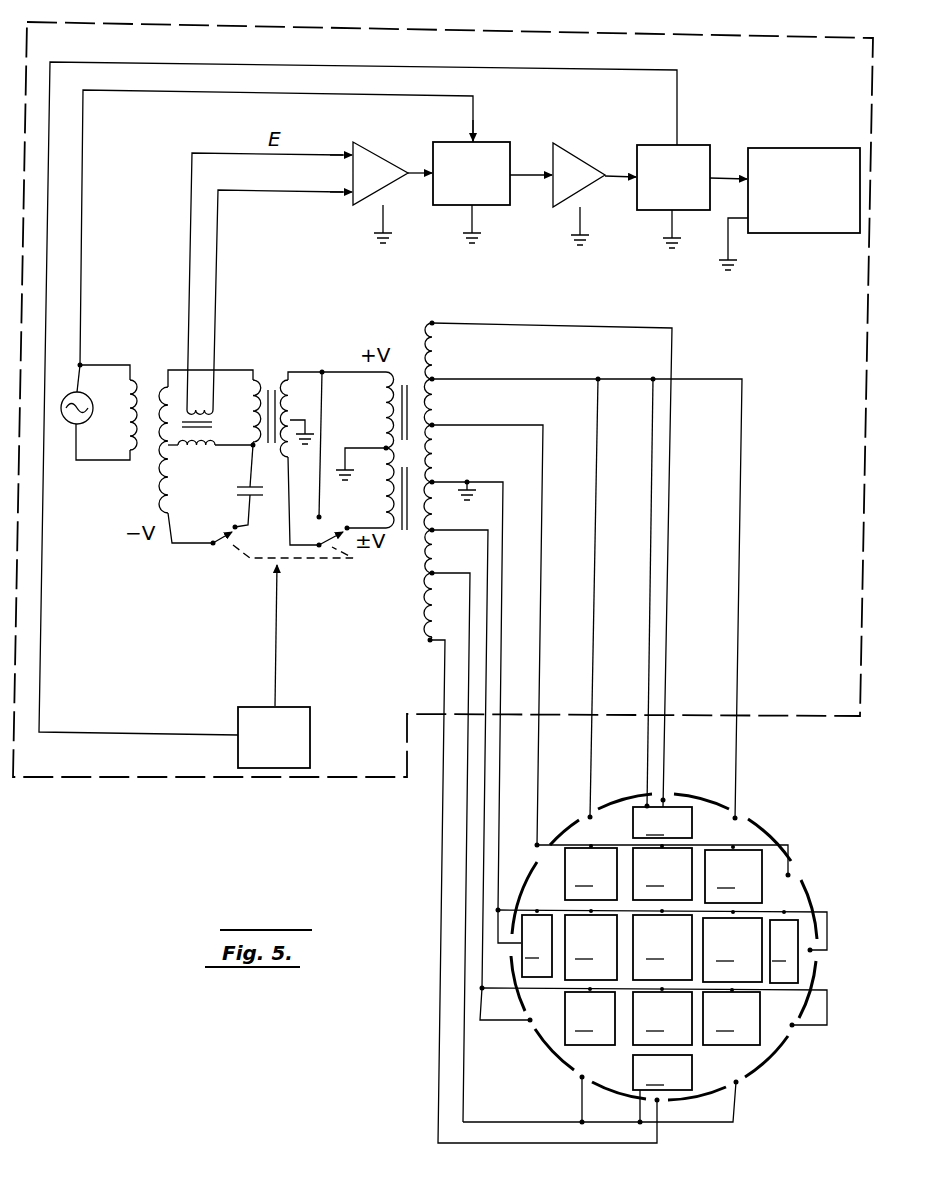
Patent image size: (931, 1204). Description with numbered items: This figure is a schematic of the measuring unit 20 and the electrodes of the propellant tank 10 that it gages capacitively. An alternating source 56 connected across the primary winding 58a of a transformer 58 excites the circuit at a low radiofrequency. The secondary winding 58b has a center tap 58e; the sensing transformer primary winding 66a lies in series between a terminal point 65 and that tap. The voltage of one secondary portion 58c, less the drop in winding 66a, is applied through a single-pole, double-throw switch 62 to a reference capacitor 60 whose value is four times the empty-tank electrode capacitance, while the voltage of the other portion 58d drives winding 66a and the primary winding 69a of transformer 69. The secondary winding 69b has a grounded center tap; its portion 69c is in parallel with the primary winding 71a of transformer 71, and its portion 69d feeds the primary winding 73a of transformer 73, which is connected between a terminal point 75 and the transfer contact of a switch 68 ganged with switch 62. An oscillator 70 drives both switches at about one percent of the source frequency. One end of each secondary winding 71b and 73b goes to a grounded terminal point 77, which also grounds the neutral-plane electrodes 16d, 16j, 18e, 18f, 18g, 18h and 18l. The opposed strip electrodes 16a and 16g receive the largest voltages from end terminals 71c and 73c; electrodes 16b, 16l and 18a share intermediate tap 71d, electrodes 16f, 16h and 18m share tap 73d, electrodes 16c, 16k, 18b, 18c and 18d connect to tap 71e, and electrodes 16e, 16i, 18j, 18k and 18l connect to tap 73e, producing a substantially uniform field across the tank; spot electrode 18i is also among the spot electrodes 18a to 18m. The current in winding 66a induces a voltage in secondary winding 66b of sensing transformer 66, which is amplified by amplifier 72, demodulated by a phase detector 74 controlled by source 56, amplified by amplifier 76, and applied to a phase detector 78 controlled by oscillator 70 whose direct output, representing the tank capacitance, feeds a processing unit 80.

The tank 10 is at (780, 830).
The strip electrode 16a is at (666, 802).
The strip electrode 16b is at (762, 797).
The strip electrode 16c is at (800, 882).
The strip electrode 16d is at (812, 960).
The strip electrode 16e is at (795, 1030).
The strip electrode 16f is at (742, 1084).
The strip electrode 16g is at (660, 1104).
The strip electrode 16h is at (578, 1077).
The strip electrode 16i is at (534, 1038).
The strip electrode 16j is at (512, 962).
The strip electrode 16k is at (536, 877).
The strip electrode 16l is at (590, 816).
The spot electrode 18a is at (662, 822).
The spot electrode 18b is at (591, 872).
The spot electrode 18c is at (662, 872).
The spot electrode 18d is at (733, 874).
The spot electrode 18e is at (538, 943).
The spot electrode 18f is at (591, 944).
The spot electrode 18g is at (662, 944).
The spot electrode 18h is at (732, 946).
The spot electrode 18i is at (784, 946).
The spot electrode 18j is at (590, 1016).
The spot electrode 18k is at (662, 1016).
The spot electrode 18l is at (731, 1016).
The spot electrode 18m is at (662, 1072).
The measuring unit 20 is at (712, 30).
The alternating source 56 is at (88, 398).
The transformer 58 is at (169, 433).
The transformer primary winding 58a is at (126, 434).
The transformer secondary winding 58b is at (163, 494).
The secondary winding portion 58c is at (190, 498).
The secondary winding portion 58d is at (166, 455).
The center tap 58e is at (191, 467).
The reference capacitor 60 is at (255, 498).
The single-pole, double-throw switch 62 is at (222, 543).
The terminal point 65 is at (250, 448).
The sensing transformer 66 is at (215, 423).
The sensing transformer primary winding 66a is at (204, 441).
The secondary winding 66b is at (198, 405).
The single-pole, double-throw switch 68 is at (338, 556).
The transformer 69 is at (307, 425).
The transformer primary winding 69a is at (252, 380).
The secondary winding 69b is at (283, 450).
The secondary winding portion 69c is at (299, 392).
The secondary winding portion 69d is at (309, 446).
The oscillator 70 is at (240, 753).
The transformer 71 is at (544, 569).
The primary winding 71a is at (384, 392).
The secondary winding 71b is at (442, 350).
The end terminal 71c is at (492, 328).
The intermediate tap 71d is at (476, 380).
The tap 71e is at (470, 425).
The amplifier 72 is at (376, 148).
The transformer 73 is at (500, 795).
The primary winding 73a is at (383, 478).
The secondary winding 73b is at (446, 519).
The end terminal 73c is at (427, 643).
The intermediate tap 73d is at (434, 586).
The tap 73e is at (446, 549).
The phase detector 74 is at (452, 208).
The terminal point 75 is at (384, 447).
The amplifier 76 is at (556, 196).
The grounded terminal point 77 is at (446, 482).
The phase detector 78 is at (689, 146).
The processing unit 80 is at (790, 234).